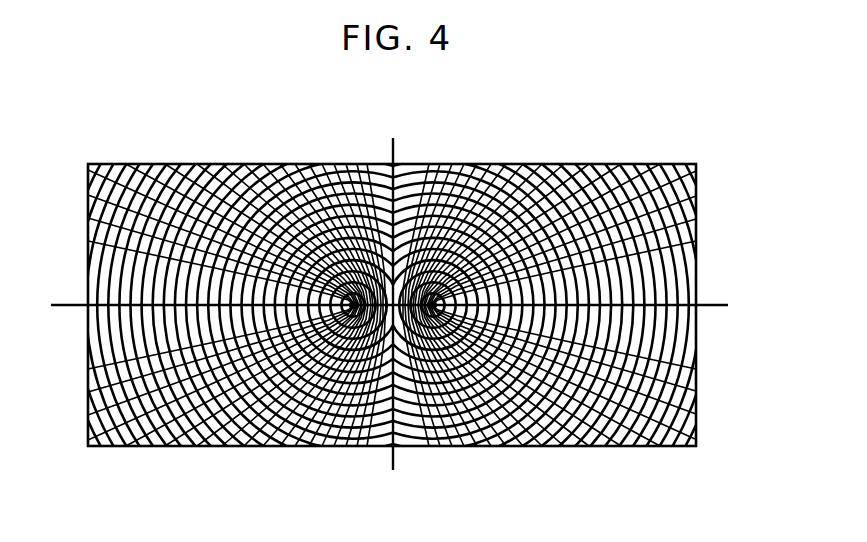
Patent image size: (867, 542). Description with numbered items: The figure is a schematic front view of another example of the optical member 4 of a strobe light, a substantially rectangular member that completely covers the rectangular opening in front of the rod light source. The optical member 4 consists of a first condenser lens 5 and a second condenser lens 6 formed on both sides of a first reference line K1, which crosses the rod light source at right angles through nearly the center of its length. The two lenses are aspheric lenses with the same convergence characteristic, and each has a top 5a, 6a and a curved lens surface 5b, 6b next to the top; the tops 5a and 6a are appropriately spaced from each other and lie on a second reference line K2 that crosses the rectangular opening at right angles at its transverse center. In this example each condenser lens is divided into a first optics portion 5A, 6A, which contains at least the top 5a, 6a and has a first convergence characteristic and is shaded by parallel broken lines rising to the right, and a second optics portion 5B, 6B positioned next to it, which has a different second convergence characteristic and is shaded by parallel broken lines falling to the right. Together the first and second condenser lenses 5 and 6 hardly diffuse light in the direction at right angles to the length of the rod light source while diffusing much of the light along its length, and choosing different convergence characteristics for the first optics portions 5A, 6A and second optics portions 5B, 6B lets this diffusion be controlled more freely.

The optical member 4 is at (228, 158).
The first condenser lens 5 is at (260, 425).
The top of the first condenser lens 5a is at (344, 300).
The curved lens surface of the first condenser lens 5b is at (190, 437).
The first optics portion of the first condenser lens 5A is at (333, 215).
The second optics portion of the first condenser lens 5B is at (152, 200).
The second condenser lens 6 is at (525, 400).
The top of the second condenser lens 6a is at (427, 300).
The curved lens surface of the second condenser lens 6b is at (550, 350).
The first optics portion of the second condenser lens 6A is at (448, 212).
The second optics portion of the second condenser lens 6B is at (612, 213).
The first reference line K1 is at (387, 142).
The second reference line K2 is at (52, 298).